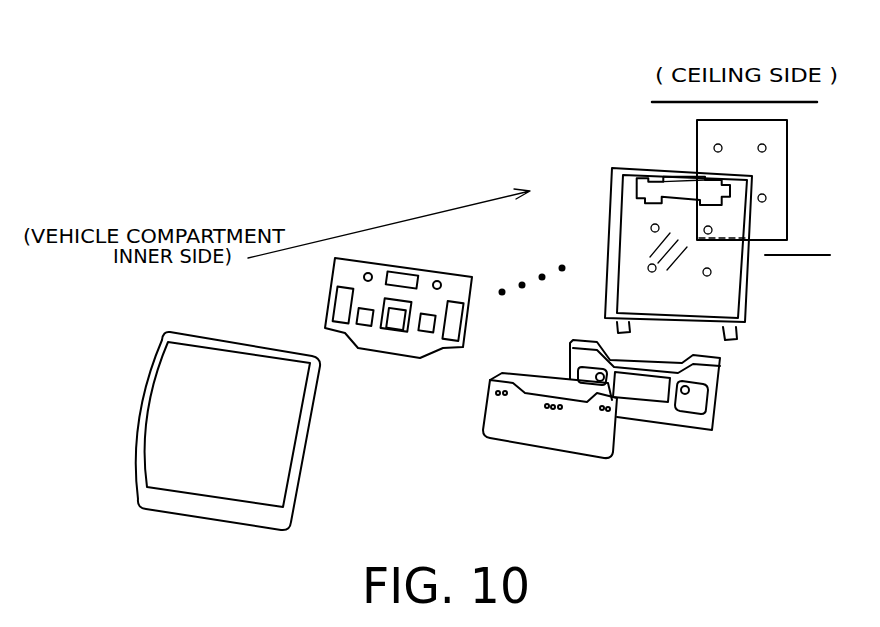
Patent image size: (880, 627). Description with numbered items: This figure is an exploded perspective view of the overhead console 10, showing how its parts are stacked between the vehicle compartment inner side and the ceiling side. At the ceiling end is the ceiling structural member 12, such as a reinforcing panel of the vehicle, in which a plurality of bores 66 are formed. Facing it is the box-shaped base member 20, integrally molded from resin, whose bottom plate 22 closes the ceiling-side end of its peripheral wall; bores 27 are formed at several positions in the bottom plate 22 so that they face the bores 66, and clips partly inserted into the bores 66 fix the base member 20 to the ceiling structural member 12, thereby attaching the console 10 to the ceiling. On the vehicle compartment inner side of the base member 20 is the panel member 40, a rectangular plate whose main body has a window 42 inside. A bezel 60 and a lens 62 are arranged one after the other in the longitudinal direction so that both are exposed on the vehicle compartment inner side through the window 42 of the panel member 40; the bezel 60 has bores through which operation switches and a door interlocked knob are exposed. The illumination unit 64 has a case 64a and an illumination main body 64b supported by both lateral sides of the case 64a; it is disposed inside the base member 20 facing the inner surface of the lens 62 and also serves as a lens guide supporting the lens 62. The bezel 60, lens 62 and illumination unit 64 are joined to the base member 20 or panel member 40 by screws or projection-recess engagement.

The overhead console 10 is at (565, 78).
The ceiling structural member 12 is at (803, 233).
The base member 20 is at (630, 169).
The bottom plate 22 is at (712, 293).
The bores 27 is at (651, 226).
The panel member 40 is at (255, 337).
The window 42 is at (286, 446).
The bezel 60 is at (405, 265).
The lens 62 is at (515, 373).
The illumination unit 64 is at (580, 342).
The case 64a is at (647, 410).
The illumination main body 64b is at (583, 375).
The bores 66 is at (715, 146).